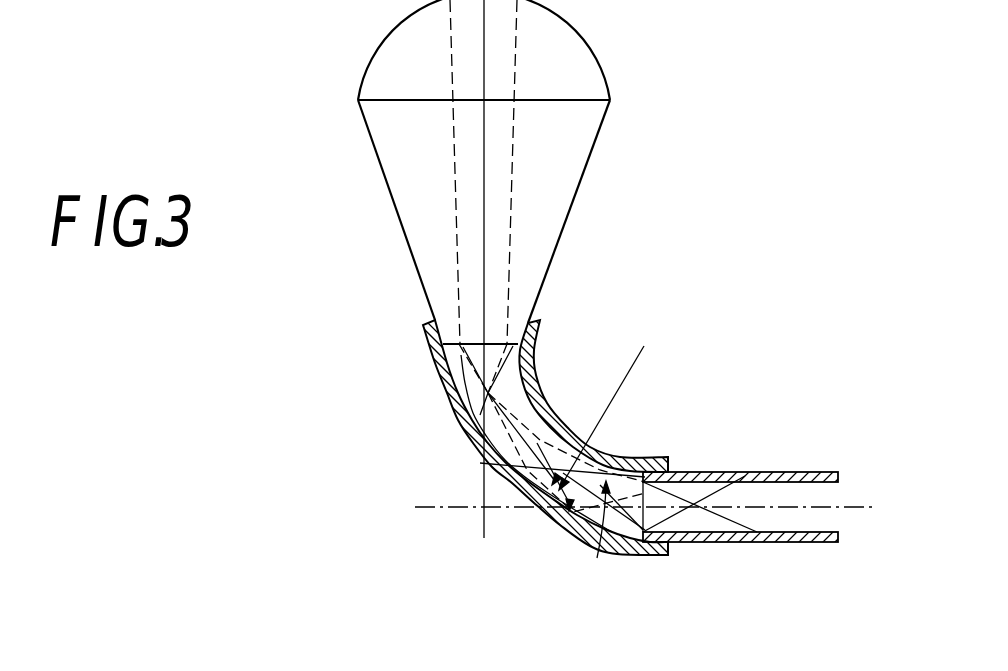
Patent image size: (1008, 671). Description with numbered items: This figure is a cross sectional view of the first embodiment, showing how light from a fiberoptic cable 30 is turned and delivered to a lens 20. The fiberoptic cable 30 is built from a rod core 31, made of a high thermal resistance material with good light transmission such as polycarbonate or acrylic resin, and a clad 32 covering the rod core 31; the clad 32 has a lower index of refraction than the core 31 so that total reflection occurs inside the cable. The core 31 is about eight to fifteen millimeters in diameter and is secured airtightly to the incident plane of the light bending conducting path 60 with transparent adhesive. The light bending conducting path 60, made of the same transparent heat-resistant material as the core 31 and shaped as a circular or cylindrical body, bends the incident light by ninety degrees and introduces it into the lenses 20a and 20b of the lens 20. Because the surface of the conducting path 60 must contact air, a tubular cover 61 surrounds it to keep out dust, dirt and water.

The lens 20 is at (603, 73).
The lens 20a is at (548, 236).
The lens 20b is at (500, 191).
The fiberoptic cable 30 is at (730, 518).
The rod core 31 is at (745, 498).
The clad 32 is at (813, 471).
The light bending conducting path (LBCP) 60 is at (533, 480).
The tubular cover 61 is at (448, 415).